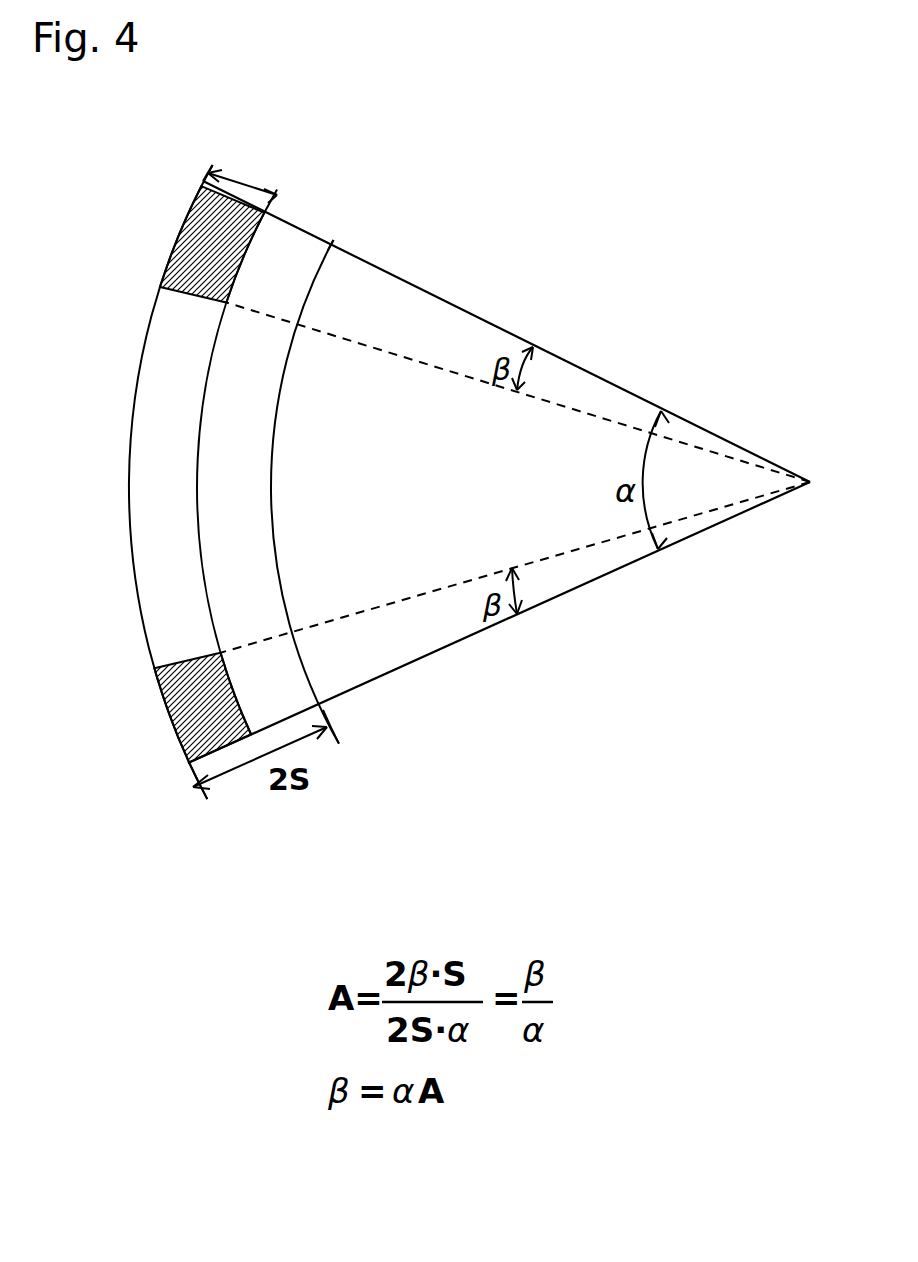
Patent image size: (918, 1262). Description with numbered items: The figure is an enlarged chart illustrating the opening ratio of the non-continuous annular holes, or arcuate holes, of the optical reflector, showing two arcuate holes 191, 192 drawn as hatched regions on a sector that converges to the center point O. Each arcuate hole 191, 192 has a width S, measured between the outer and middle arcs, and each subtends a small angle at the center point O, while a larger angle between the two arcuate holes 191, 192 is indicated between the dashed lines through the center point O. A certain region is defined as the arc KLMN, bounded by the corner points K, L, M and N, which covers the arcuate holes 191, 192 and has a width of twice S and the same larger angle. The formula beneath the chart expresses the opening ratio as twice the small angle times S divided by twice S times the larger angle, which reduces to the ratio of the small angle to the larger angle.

The arcuate hole 191 is at (178, 232).
The arcuate hole 192 is at (172, 716).
The center point O is at (518, 472).
The corner point of arc region K is at (193, 167).
The corner point of arc region L is at (177, 776).
The corner point of arc region M is at (346, 723).
The corner point of arc region N is at (345, 226).
The hole width S is at (242, 175).